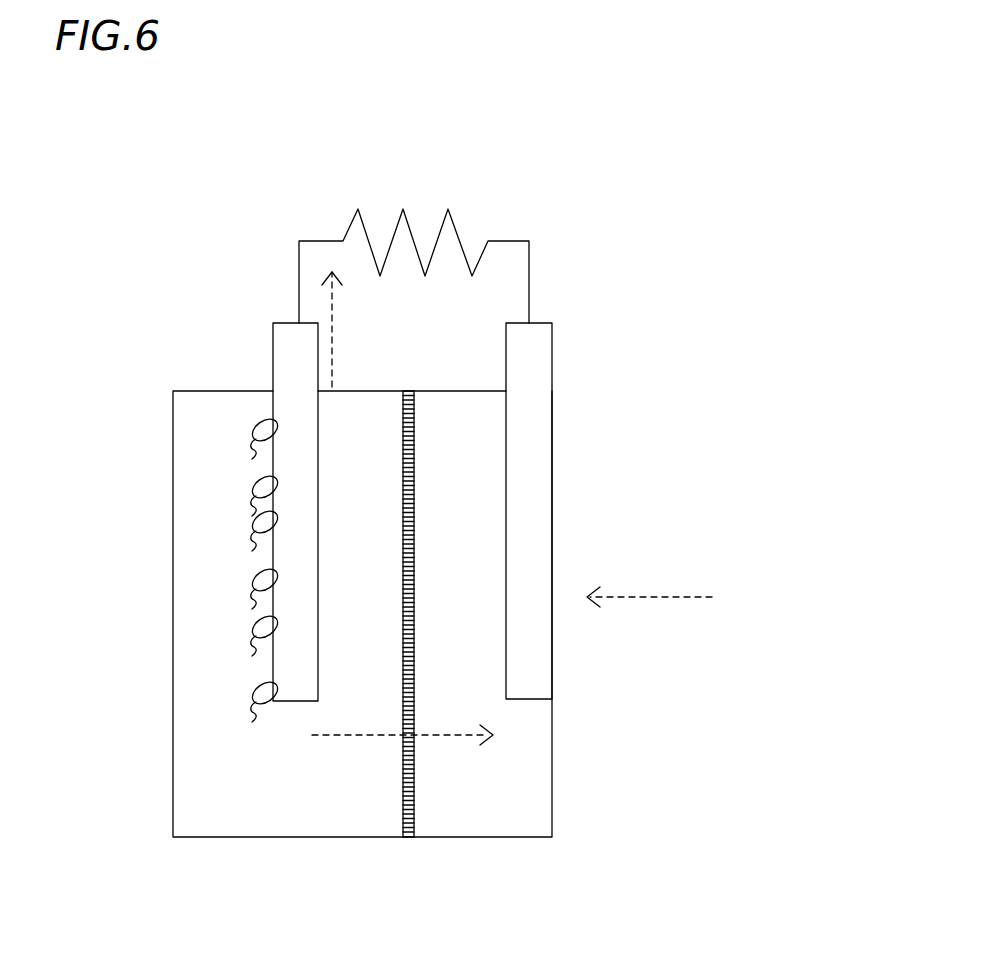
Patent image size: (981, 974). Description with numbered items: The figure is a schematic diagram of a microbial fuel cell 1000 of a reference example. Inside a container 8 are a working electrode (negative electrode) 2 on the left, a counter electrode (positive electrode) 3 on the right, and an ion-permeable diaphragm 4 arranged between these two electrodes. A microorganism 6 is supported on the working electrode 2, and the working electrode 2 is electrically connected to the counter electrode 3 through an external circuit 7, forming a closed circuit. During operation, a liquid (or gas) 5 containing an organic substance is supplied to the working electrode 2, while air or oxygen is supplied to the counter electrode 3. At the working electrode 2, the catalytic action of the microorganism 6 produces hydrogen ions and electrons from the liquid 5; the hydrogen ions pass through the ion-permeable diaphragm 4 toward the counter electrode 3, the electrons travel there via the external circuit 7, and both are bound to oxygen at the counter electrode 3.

The microbial fuel cell 1000 is at (747, 253).
The working electrode (negative electrode) 2 is at (285, 358).
The counter electrode (positive electrode) 3 is at (538, 358).
The ion-permeable diaphragm 4 is at (414, 817).
The liquid (or gas) containing an organic substance 5 is at (266, 812).
The microorganism 6 is at (252, 690).
The external circuit 7 is at (440, 209).
The container 8 is at (553, 784).